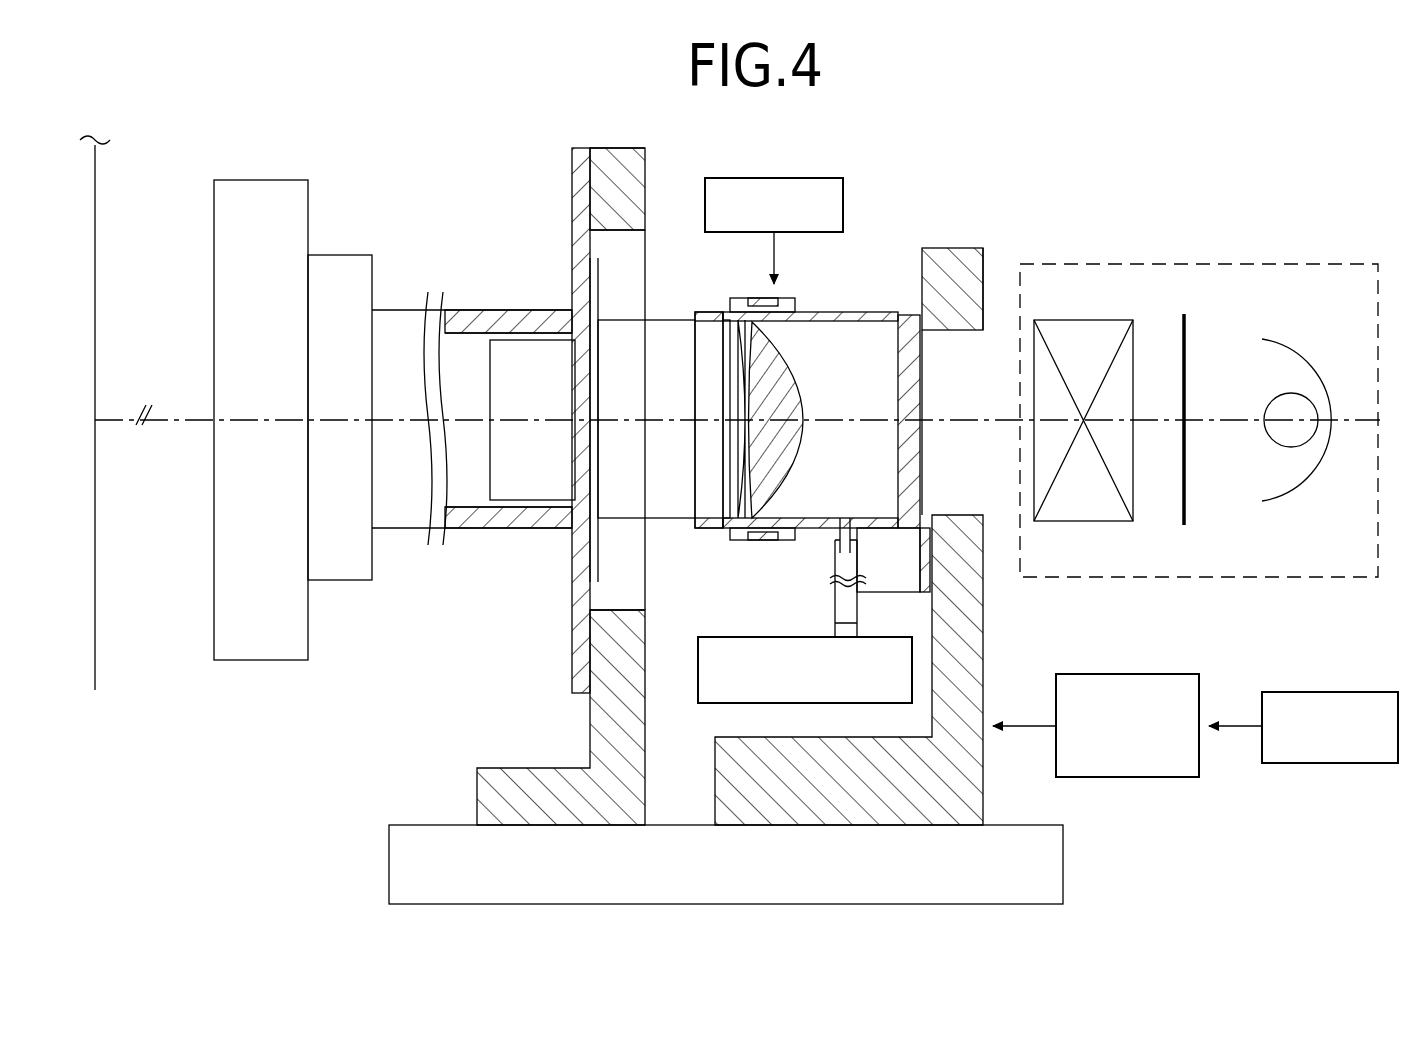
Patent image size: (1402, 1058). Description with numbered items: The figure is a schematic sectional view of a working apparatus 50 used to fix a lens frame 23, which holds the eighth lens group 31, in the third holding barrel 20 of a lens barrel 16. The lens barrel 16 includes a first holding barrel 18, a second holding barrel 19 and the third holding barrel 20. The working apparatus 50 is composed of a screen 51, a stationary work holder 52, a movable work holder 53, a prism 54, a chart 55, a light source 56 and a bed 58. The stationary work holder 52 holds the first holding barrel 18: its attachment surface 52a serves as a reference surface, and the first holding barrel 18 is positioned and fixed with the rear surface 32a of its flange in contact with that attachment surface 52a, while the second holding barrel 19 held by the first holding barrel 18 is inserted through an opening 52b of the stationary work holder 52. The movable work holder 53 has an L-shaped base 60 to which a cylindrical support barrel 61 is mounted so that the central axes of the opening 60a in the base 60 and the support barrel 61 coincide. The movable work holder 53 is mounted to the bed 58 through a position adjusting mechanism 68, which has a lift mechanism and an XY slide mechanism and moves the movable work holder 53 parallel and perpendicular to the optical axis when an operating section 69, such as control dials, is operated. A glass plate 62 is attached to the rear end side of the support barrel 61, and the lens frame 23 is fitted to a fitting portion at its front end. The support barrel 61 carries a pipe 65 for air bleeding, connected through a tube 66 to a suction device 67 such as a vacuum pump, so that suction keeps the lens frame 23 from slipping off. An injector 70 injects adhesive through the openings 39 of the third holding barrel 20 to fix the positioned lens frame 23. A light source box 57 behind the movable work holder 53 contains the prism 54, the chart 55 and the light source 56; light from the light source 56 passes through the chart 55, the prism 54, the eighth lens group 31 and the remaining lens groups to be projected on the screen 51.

The lens barrel 16 is at (422, 215).
The first holding barrel 18 is at (538, 318).
The second holding barrel 19 is at (664, 324).
The third holding barrel 20 is at (735, 532).
The lens frame 23 is at (775, 533).
The eighth lens group 31 is at (790, 385).
The rear surface of the flange 32a is at (602, 148).
The openings of the third holding barrel 39 is at (765, 300).
The working apparatus 50 is at (1158, 176).
The screen 51 is at (97, 690).
The stationary work holder 52 is at (628, 152).
The attachment surface 52a is at (585, 695).
The opening of the stationary work holder 52b is at (640, 245).
The movable work holder 53 is at (985, 128).
The prism 54 is at (1062, 330).
The chart 55 is at (1186, 376).
The light source 56 is at (1290, 394).
The light source box 57 is at (1204, 264).
The bed 58 is at (410, 868).
The L-shaped base 60 is at (964, 246).
The opening of the base 60a is at (987, 332).
The cylindrical support barrel 61 is at (877, 318).
The glass plate 62 is at (912, 472).
The pipe 65 is at (836, 545).
The tube 66 is at (850, 603).
The suction device 67 is at (755, 637).
The position adjusting mechanism 68 is at (1127, 674).
The operating section 69 is at (1333, 692).
The injector 70 is at (757, 178).